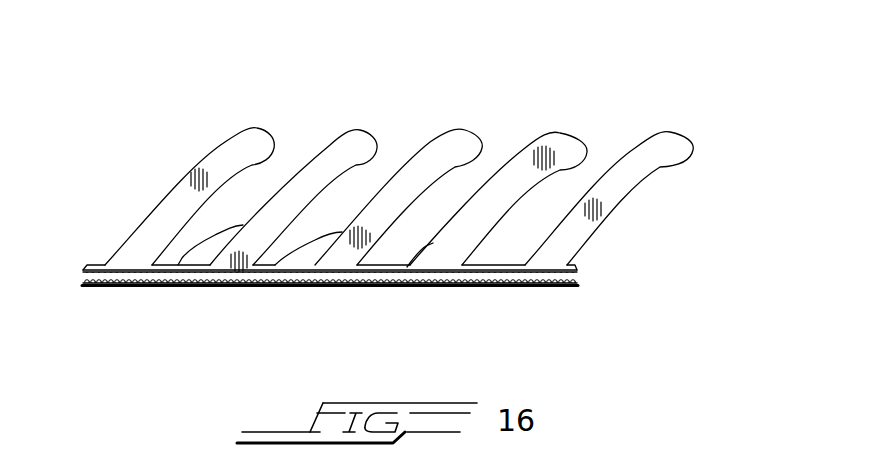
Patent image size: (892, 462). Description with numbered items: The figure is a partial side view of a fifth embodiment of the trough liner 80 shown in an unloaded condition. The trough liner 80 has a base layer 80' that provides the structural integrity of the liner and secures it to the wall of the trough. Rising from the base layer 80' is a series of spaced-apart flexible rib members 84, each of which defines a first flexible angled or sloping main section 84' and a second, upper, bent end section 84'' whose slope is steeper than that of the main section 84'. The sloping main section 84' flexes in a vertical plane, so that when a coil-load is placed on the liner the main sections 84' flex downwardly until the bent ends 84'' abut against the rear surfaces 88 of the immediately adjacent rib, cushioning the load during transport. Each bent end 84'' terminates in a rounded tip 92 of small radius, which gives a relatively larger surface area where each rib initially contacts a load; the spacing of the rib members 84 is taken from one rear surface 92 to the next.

The trough liner 80 is at (419, 187).
The base layer 80' is at (347, 308).
The flexible rib member 84 is at (439, 157).
The sloping main section 84' is at (409, 208).
The bent end section 84'' is at (517, 93).
The rear surface 88 is at (182, 262).
The rounded tip 92 is at (123, 238).